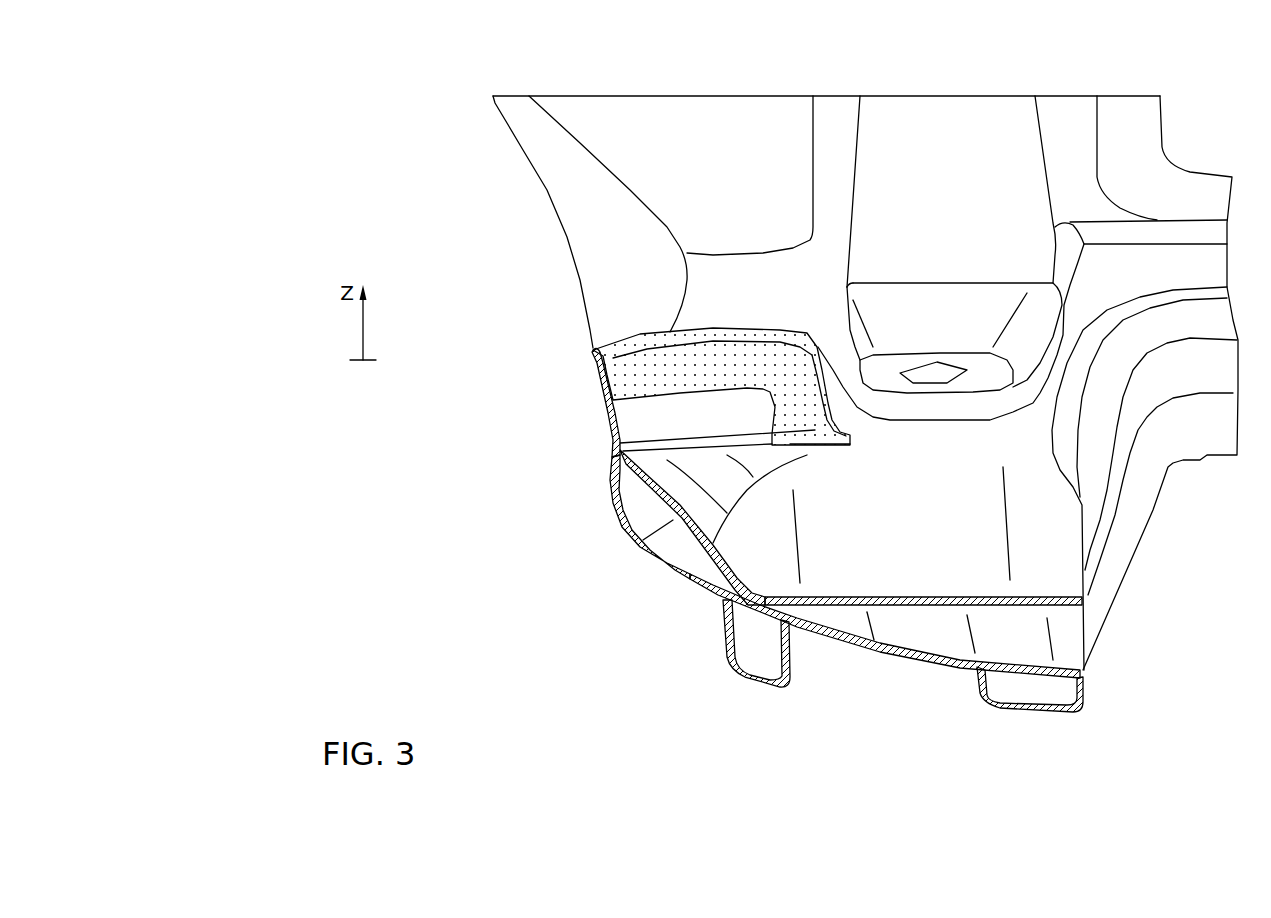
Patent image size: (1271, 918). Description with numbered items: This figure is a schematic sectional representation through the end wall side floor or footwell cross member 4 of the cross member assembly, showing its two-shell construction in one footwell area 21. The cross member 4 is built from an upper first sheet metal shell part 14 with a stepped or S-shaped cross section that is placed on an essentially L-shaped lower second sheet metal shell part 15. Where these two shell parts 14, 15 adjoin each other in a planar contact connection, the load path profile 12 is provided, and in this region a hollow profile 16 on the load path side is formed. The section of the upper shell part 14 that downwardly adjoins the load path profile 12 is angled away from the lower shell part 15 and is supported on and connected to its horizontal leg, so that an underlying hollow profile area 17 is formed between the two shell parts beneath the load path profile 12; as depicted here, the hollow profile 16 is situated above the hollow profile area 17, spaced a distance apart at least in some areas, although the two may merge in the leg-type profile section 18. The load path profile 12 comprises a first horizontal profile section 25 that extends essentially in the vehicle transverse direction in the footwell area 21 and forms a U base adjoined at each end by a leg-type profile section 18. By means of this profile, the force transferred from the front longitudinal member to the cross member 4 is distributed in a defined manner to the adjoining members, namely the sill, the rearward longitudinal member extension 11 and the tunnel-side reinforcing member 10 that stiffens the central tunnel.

The floor or footwell cross member 4 is at (743, 180).
The reinforcing member 10 is at (1082, 697).
The longitudinal member extension 11 is at (760, 680).
The load path profile 12 is at (647, 350).
The first sheet metal shell part 14 is at (653, 560).
The second sheet metal shell part 15 is at (713, 557).
The hollow profile 16 is at (598, 368).
The hollow profile area 17 is at (637, 507).
The leg-type profile section 18 is at (803, 383).
The footwell area 21 is at (923, 512).
The first horizontal profile section 25 is at (692, 353).